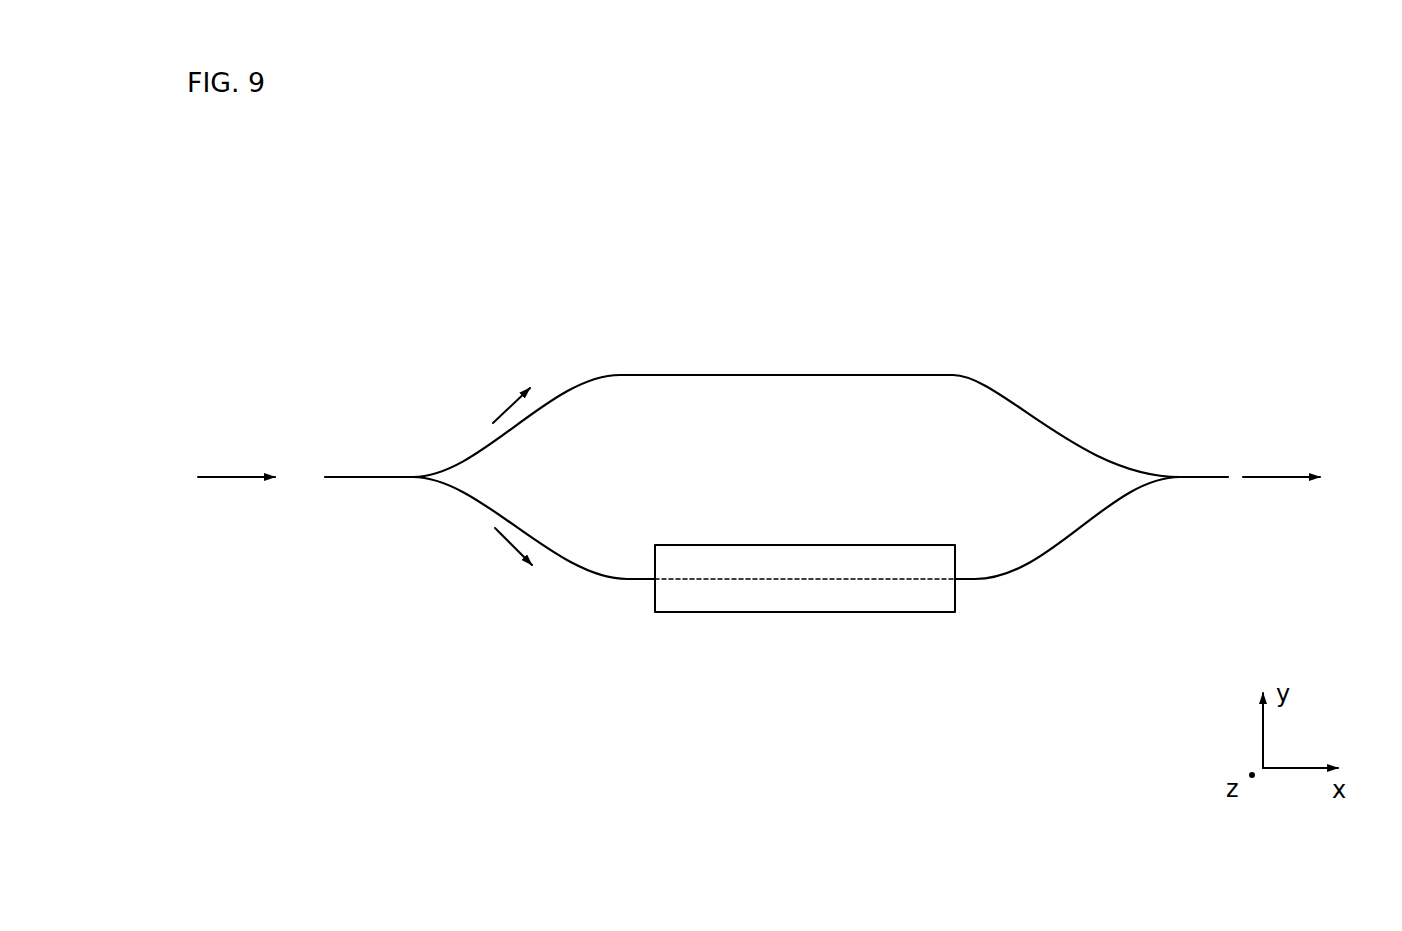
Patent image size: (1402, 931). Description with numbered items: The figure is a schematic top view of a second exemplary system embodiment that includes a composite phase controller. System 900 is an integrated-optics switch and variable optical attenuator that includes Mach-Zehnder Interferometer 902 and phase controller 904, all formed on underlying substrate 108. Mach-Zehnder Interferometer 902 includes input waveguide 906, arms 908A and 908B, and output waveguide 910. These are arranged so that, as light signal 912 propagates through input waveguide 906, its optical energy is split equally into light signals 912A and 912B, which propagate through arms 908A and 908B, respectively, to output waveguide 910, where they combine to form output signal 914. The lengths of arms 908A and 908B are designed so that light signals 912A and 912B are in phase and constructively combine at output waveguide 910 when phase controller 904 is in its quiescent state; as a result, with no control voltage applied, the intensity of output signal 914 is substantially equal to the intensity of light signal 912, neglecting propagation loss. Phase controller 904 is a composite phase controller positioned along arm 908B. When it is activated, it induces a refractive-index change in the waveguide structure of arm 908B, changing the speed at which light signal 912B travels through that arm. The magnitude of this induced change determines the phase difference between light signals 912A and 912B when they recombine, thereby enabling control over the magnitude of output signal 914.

The system 900 is at (307, 232).
The Mach-Zehnder Interferometer 902 is at (475, 320).
The phase controller 904 is at (702, 625).
The input waveguide 906 is at (390, 477).
The arm 908A is at (533, 408).
The arm 908B is at (533, 542).
The output waveguide 910 is at (1207, 478).
The light signal 912 is at (236, 455).
The light signal 912A is at (480, 404).
The light signal 912B is at (479, 547).
The output signal 914 is at (1281, 455).
The substrate 108 is at (1205, 339).